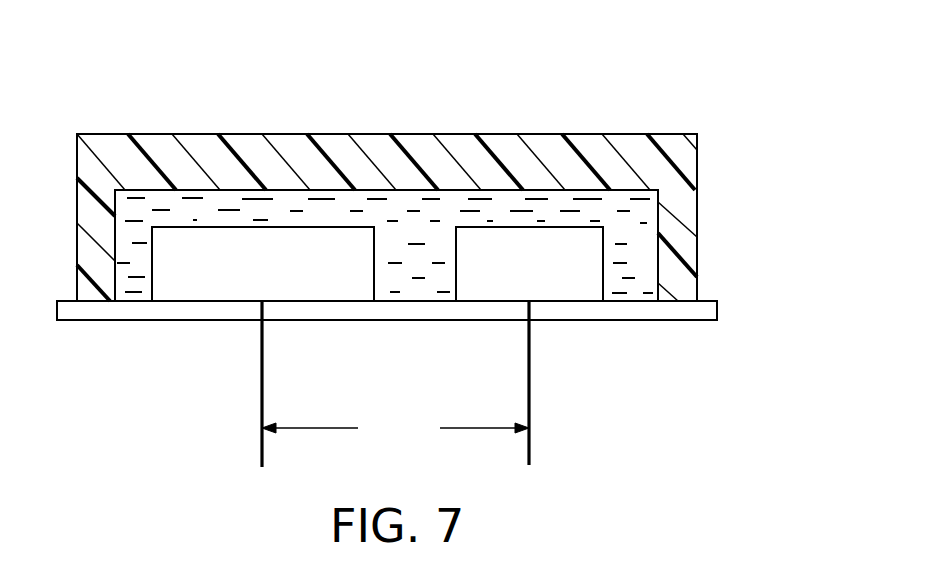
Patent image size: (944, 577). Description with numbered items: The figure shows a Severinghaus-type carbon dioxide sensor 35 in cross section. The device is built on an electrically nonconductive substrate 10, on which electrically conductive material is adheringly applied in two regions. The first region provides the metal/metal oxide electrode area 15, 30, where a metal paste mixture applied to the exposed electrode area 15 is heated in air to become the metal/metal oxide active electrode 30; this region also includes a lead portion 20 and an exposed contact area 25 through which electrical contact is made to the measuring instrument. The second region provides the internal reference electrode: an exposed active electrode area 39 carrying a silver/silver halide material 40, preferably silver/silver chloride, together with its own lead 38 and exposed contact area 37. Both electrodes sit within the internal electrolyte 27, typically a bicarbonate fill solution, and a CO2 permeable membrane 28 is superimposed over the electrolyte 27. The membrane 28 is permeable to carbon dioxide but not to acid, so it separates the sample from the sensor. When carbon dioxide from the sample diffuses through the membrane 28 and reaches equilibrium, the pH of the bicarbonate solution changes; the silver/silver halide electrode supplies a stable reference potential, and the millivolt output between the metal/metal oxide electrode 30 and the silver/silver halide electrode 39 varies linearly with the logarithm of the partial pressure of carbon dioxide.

The Severinghaus type of sensor 35 is at (668, 107).
The CO2 permeable membrane 28 is at (683, 166).
The internal electrolyte 27 is at (647, 248).
The electrically nonconductive substrate 10 is at (717, 312).
The exposed electrode area 15 is at (238, 347).
The metal/metal oxide active electrode 30 is at (312, 284).
The lead portion 20 is at (182, 384).
The exposed contact area 25 is at (262, 388).
The exposed active electrode area 39 is at (582, 284).
The silver/silver halide material 40 is at (575, 346).
The exposed contact area 37 is at (611, 383).
The lead 38 is at (530, 391).